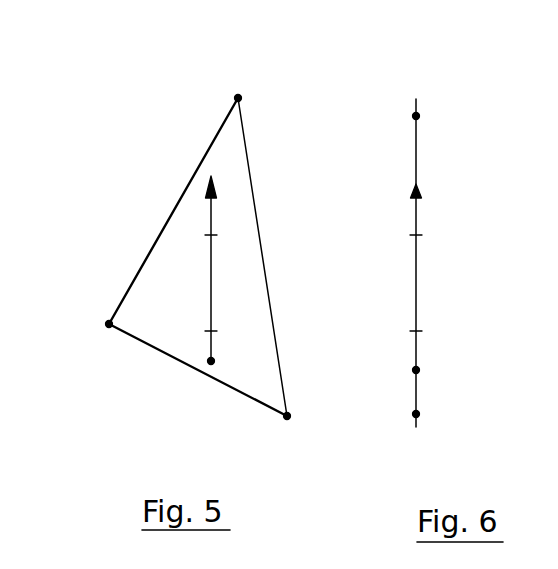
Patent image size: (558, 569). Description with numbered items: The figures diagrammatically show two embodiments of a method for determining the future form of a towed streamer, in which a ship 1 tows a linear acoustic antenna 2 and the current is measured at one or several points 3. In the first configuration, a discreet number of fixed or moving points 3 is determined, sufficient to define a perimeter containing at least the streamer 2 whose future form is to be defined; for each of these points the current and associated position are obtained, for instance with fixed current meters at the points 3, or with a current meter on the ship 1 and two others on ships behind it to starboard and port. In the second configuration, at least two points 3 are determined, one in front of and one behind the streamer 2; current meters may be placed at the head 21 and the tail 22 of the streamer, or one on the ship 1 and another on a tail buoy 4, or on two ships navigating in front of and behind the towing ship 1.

In FIG. 5, the ship 1 is at (207, 182).
In FIG. 6, the ship 1 is at (420, 190).
In FIG. 5, the linear acoustic antenna 2 is at (208, 258).
In FIG. 6, the linear acoustic antenna 2 is at (419, 264).
In FIG. 5, the points 3 is at (234, 97).
In FIG. 6, the points 3 is at (420, 117).
In FIG. 6, the tail buoy 4 is at (420, 369).
In FIG. 5, the head of the streamer 21 is at (213, 235).
In FIG. 6, the head of the streamer 21 is at (416, 235).
In FIG. 5, the tail of the streamer 22 is at (213, 331).
In FIG. 6, the tail of the streamer 22 is at (416, 331).